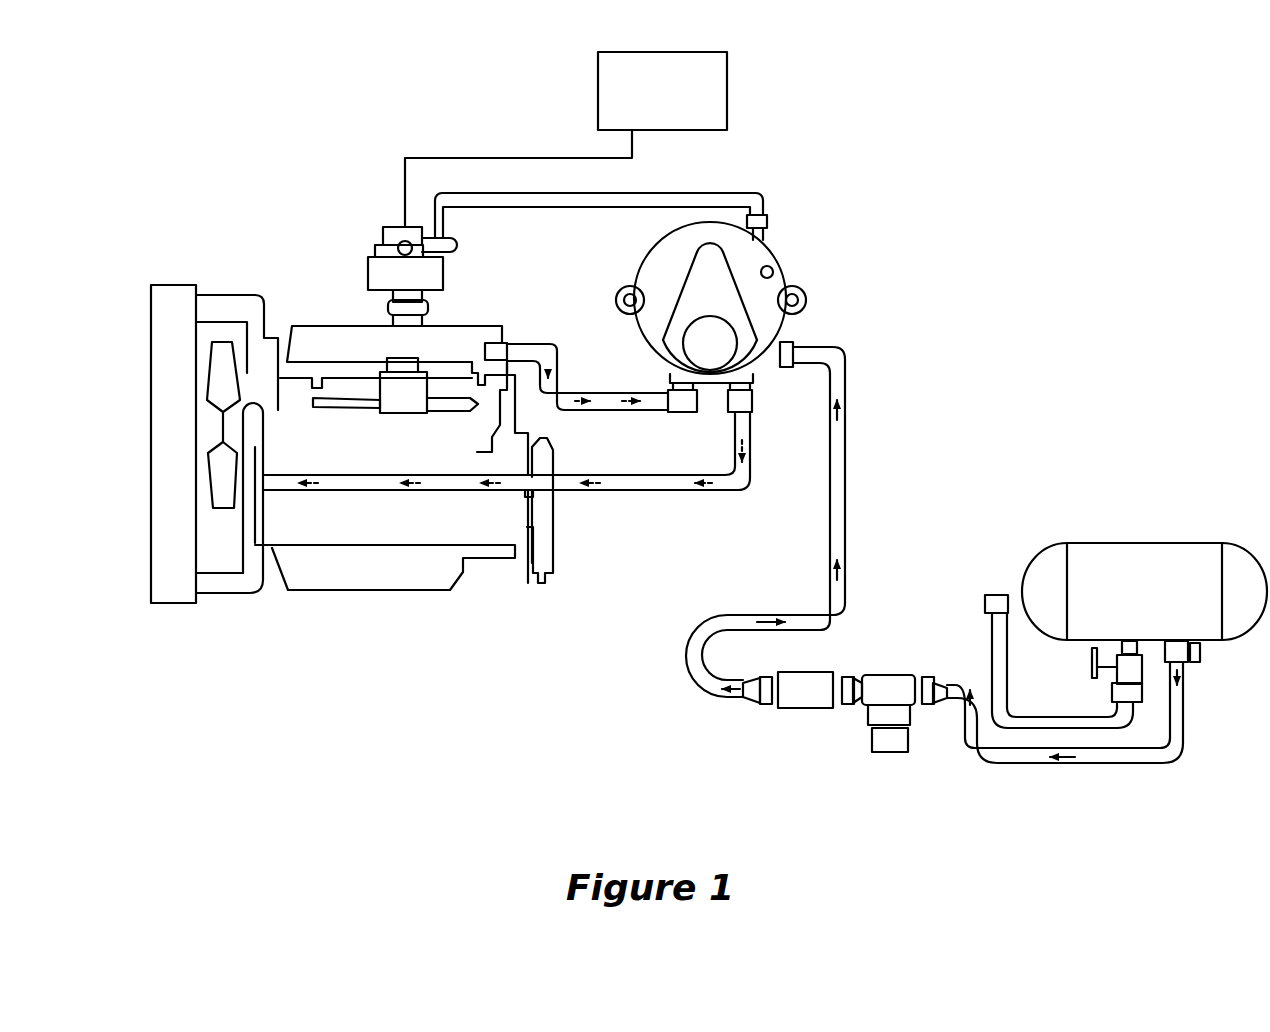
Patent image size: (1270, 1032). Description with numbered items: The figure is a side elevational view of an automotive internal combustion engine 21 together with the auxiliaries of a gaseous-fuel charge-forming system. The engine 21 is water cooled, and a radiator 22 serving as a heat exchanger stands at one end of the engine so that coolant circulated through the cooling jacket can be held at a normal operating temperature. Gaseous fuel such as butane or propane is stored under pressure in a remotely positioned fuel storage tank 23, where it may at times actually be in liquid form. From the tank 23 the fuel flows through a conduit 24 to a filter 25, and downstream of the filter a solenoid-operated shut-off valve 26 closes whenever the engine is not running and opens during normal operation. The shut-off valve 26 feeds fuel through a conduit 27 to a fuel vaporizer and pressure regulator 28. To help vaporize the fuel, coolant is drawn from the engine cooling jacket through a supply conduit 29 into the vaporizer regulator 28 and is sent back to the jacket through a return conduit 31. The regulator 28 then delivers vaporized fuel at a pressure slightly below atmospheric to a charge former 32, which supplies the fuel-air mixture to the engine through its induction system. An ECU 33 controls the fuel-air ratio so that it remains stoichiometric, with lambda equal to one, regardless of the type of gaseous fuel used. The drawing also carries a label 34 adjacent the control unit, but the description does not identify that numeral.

The internal combustion engine 21 is at (373, 602).
The radiator 22 is at (152, 577).
The fuel storage tank 23 is at (1125, 543).
The conduit 24 is at (980, 765).
The filter 25 is at (892, 753).
The solenoid-operated shut-off valve 26 is at (808, 710).
The conduit 27 is at (845, 475).
The fuel vaporizer and pressure regulator 28 is at (634, 260).
The supply conduit 29 is at (583, 411).
The return conduit 31 is at (618, 492).
The charge former 32 is at (364, 262).
The ECU 33 is at (503, 210).
The electronic control unit (ECU) 34 is at (733, 82).